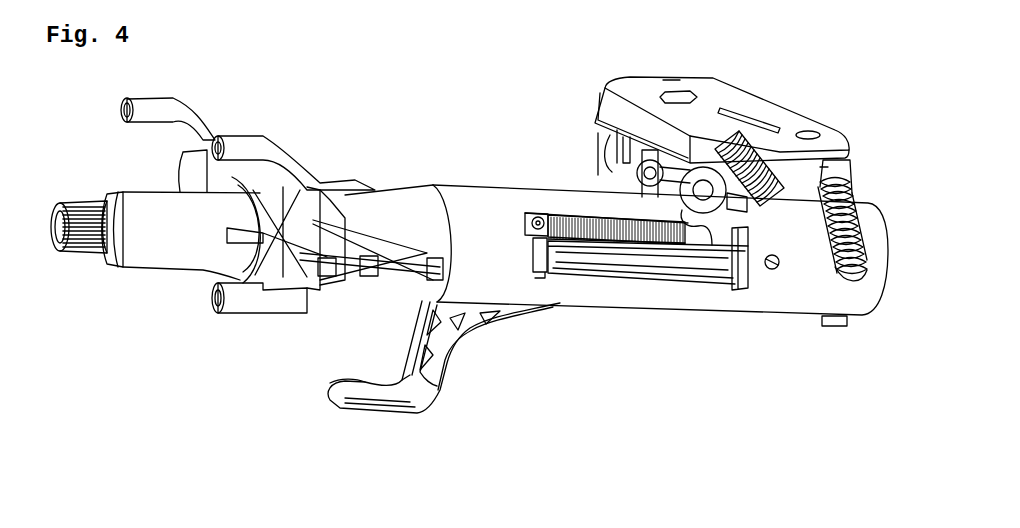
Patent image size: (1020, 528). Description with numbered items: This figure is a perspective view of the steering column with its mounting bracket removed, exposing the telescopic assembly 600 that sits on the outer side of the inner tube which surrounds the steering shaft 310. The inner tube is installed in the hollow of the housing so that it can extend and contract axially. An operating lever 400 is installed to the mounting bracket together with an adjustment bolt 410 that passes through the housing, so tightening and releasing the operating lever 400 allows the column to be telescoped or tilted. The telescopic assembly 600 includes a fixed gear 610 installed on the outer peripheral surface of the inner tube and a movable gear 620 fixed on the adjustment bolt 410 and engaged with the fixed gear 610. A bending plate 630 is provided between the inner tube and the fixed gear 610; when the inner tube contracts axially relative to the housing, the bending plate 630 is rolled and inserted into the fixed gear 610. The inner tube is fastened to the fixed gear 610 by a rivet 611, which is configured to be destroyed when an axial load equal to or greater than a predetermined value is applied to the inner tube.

The steering shaft 310 is at (150, 252).
The adjustment bolt 410 is at (618, 160).
The operating lever 400 is at (407, 407).
The telescopic assembly 600 is at (530, 272).
The fixed gear 610 is at (663, 245).
The rivet 611 is at (543, 240).
The movable gear 620 is at (748, 256).
The bending plate 630 is at (713, 268).